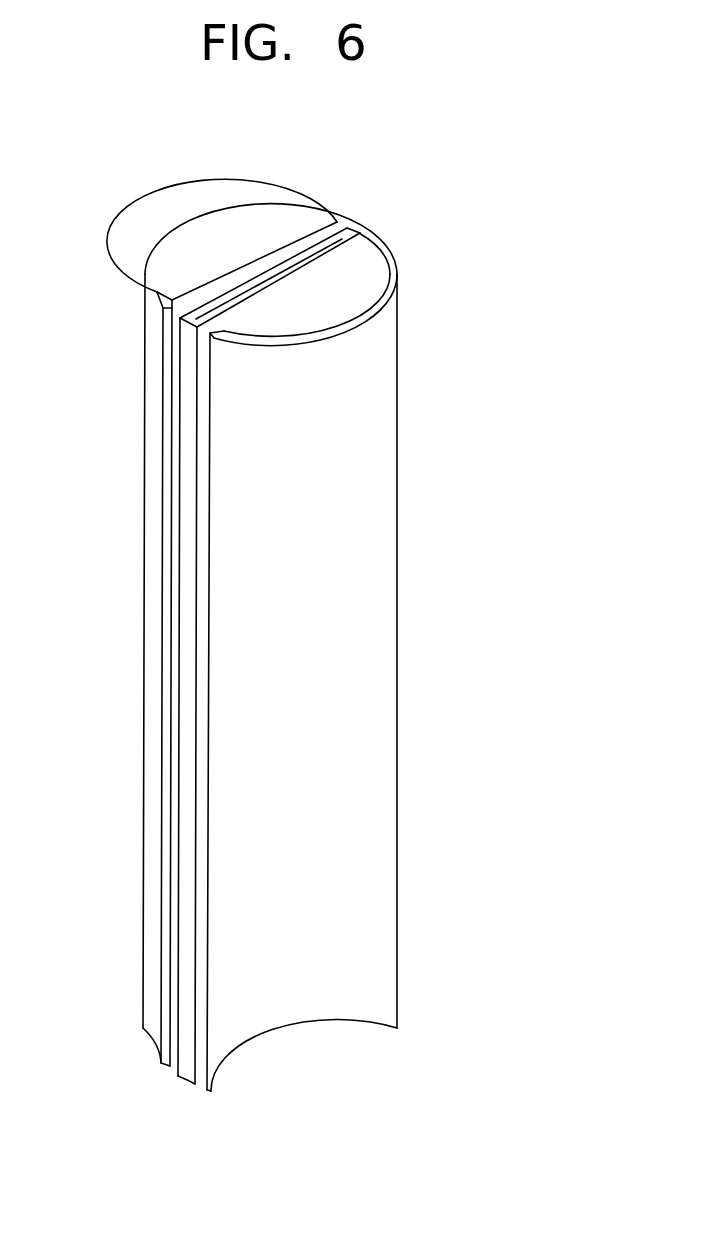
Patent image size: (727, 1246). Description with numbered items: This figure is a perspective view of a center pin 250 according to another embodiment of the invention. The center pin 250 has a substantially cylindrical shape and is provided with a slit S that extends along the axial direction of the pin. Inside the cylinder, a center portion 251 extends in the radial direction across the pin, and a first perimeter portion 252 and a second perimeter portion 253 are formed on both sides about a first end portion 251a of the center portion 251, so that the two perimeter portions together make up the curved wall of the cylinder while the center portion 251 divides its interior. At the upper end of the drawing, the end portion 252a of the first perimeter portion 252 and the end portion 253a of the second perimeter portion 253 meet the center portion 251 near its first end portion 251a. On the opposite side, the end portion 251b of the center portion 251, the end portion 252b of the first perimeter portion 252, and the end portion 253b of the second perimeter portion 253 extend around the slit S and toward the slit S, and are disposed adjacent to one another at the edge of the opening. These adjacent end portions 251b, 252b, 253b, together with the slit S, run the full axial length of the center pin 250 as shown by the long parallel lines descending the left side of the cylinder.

The center pin 250 is at (433, 303).
The center portion 251 is at (222, 620).
The first end portion of center portion 251a is at (349, 221).
The end portion of center portion 251b is at (190, 319).
The first perimeter portion 252 is at (196, 601).
The end portion of first perimeter portion 252a is at (291, 204).
The end portion of first perimeter portion 252b is at (150, 288).
The second perimeter portion 253 is at (271, 648).
The end portion of second perimeter portion 253a is at (382, 250).
The end portion of second perimeter portion 253b is at (220, 338).
The slit S is at (177, 483).